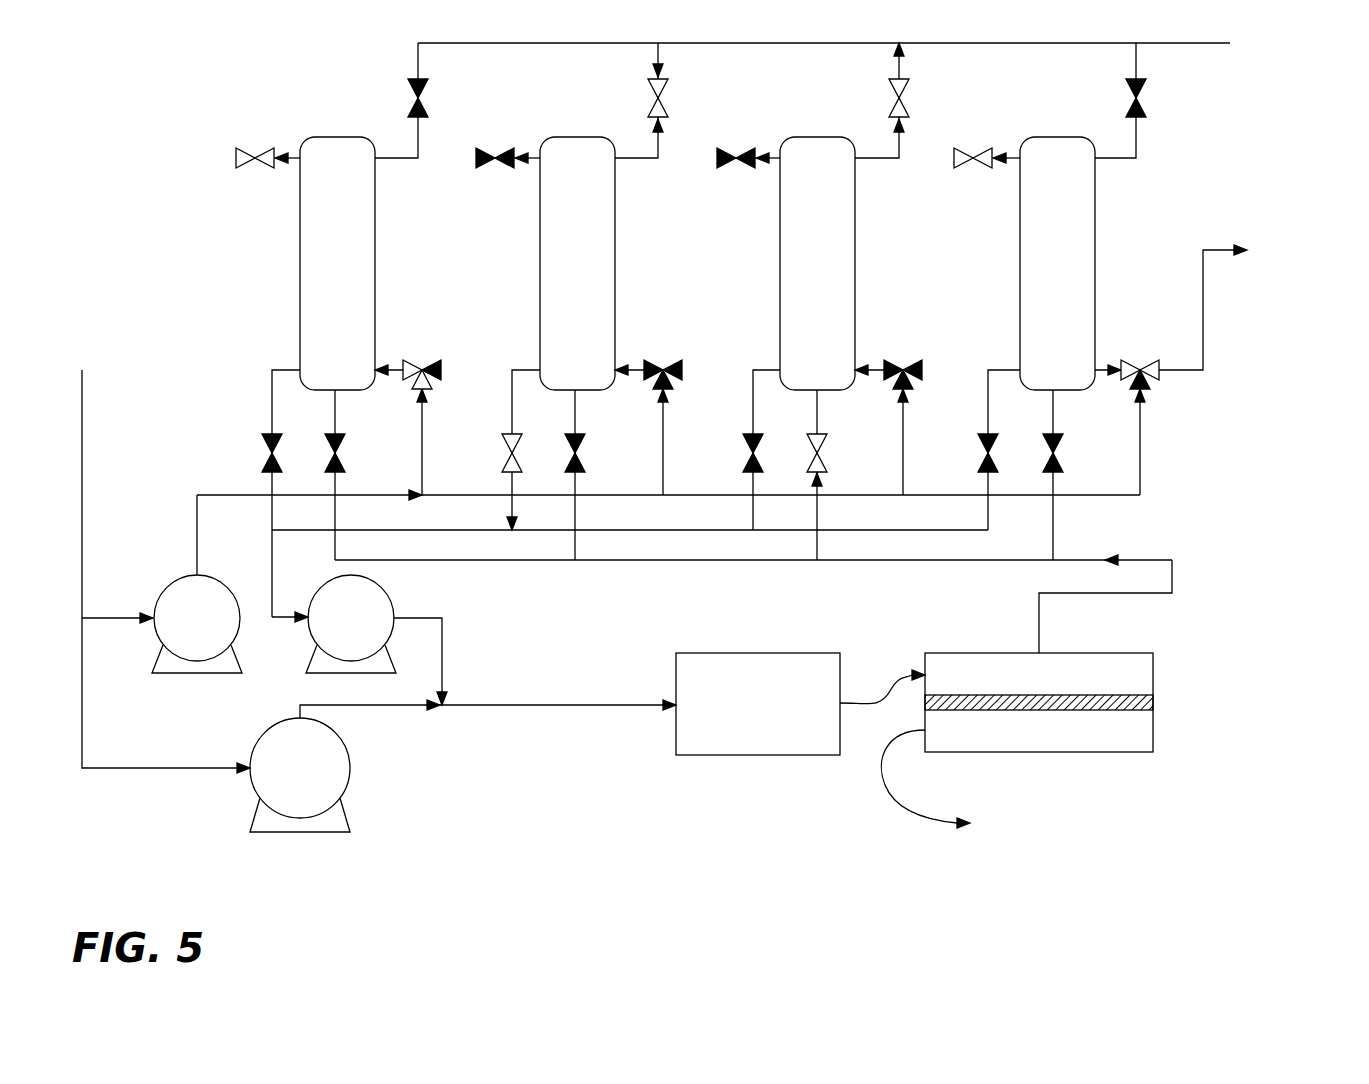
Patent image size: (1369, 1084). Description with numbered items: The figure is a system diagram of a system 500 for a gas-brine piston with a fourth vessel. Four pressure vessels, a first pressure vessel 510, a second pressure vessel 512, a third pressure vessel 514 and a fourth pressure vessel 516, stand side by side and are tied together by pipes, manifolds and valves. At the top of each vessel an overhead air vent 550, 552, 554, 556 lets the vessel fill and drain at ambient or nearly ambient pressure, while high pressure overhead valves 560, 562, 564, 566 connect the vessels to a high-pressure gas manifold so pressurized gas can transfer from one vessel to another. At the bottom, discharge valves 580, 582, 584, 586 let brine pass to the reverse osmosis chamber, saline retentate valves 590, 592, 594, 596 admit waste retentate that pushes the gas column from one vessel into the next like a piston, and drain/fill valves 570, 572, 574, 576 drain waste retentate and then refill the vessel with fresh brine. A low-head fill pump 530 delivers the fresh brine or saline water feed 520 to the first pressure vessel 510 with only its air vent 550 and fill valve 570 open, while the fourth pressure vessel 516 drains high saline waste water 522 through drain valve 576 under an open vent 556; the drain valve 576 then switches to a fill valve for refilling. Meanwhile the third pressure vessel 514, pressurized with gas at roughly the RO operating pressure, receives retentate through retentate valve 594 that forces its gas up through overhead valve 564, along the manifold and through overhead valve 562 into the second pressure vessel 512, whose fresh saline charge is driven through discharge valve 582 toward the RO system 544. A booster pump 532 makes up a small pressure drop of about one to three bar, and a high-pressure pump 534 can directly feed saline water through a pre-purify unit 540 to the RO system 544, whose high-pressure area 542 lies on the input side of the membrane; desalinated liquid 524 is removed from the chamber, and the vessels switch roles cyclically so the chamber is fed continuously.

The system 500 is at (1240, 890).
The pressure vessel PV 1 510 is at (375, 232).
The pressure vessel PV 2 512 is at (615, 232).
The pressure vessel PV 3 514 is at (855, 230).
The pressure vessel PV 4 516 is at (1095, 225).
The fresh brine or saline water feed 520 is at (149, 514).
The high saline waste water 522 is at (1251, 277).
The desalinated liquid 524 is at (1049, 788).
The low-head fill pump 530 is at (197, 584).
The booster pump 532 is at (359, 640).
The high-pressure pump 534 is at (463, 766).
The pre-purify unit 540 is at (758, 704).
The high-pressure area 542 is at (996, 702).
The reverse osmosis (RO) system 544 is at (1153, 702).
The overhead air vent 550 is at (268, 145).
The overhead air vent 552 is at (508, 145).
The overhead air vent 554 is at (748, 145).
The overhead air vent 556 is at (987, 145).
The high pressure overhead valve 560 is at (395, 100).
The high pressure overhead valve 562 is at (635, 100).
The high pressure overhead valve 564 is at (878, 100).
The high pressure overhead valve 566 is at (1114, 100).
The bottom drain/fill valve 570 is at (409, 414).
The bottom drain/fill valve 572 is at (648, 414).
The bottom drain/fill valve 574 is at (889, 414).
The bottom drain/fill valve 576 is at (1128, 414).
The bottom discharge valve 580 is at (261, 493).
The bottom discharge valve 582 is at (500, 450).
The bottom discharge valve 584 is at (741, 450).
The bottom discharge valve 586 is at (979, 450).
The bottom saline retentate valve 590 is at (357, 475).
The bottom saline retentate valve 592 is at (597, 475).
The bottom saline retentate valve 594 is at (838, 475).
The bottom saline retentate valve 596 is at (1074, 475).